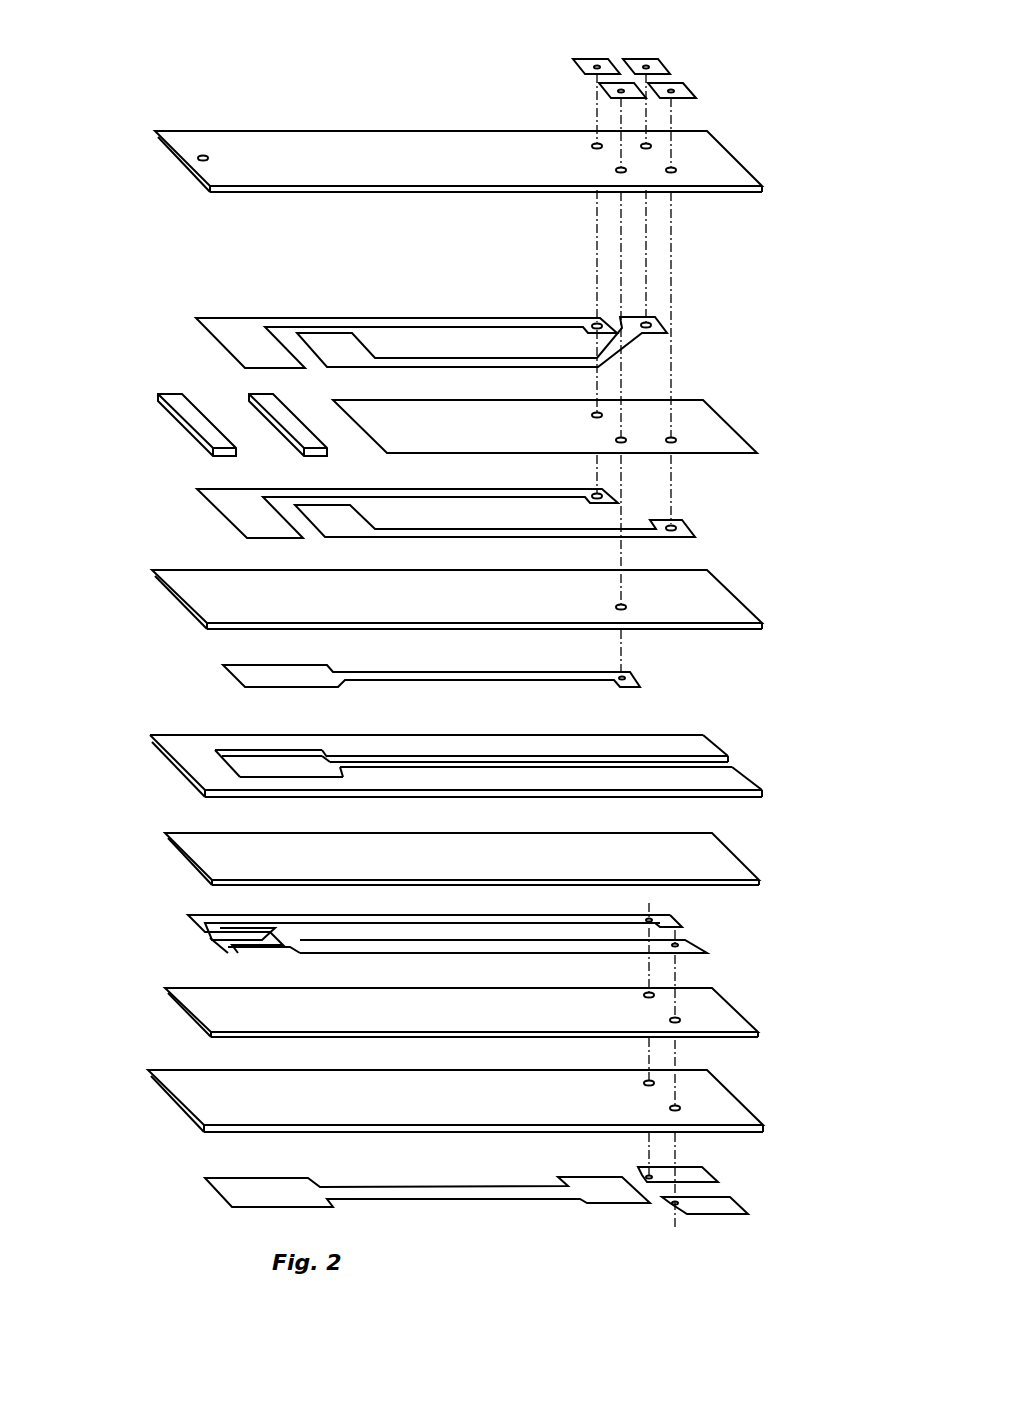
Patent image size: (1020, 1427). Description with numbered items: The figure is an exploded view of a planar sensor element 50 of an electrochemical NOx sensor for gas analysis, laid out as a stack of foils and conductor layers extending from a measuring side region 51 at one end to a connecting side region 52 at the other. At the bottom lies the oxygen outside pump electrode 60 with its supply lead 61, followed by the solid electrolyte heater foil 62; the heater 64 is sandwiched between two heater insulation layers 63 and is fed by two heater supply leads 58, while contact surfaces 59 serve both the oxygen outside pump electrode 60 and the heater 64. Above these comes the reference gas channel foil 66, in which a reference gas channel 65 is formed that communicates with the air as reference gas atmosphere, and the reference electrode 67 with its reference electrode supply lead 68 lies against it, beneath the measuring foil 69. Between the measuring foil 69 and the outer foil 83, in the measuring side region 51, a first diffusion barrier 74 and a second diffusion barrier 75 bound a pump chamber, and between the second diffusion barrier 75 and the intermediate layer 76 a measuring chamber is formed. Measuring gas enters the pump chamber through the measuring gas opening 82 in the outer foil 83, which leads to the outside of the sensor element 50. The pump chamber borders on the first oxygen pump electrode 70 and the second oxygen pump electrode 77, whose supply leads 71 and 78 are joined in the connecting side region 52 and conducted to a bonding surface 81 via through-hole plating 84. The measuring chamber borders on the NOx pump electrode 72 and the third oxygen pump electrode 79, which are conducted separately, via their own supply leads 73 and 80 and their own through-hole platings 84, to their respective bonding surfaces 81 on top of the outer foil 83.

The planar sensor element 50 is at (788, 172).
The measuring side region 51 is at (150, 1136).
The connecting side region 52 is at (499, 1205).
The heater supply leads 58 is at (665, 920).
The contact surfaces 59 is at (734, 1186).
The oxygen outside pump electrode 60 is at (240, 1190).
The supply lead 61 is at (536, 1196).
The heater foil 62 is at (725, 1103).
The heater insulation layers 63 is at (720, 858).
The heater 64 is at (195, 916).
The reference gas channel 65 is at (258, 763).
The reference gas channel foil 66 is at (732, 777).
The reference electrode 67 is at (258, 669).
The reference electrode supply lead 68 is at (538, 678).
The measuring foil 69 is at (718, 603).
The first oxygen pump electrode 70 is at (240, 511).
The supply lead 71 is at (562, 496).
The NOx pump electrode 72 is at (345, 523).
The supply lead 73 is at (640, 534).
The first diffusion barrier 74 is at (187, 413).
The second diffusion barrier 75 is at (263, 397).
The intermediate layer 76 is at (715, 420).
The second oxygen pump electrode 77 is at (240, 337).
The supply lead 78 is at (551, 320).
The third oxygen pump electrode 79 is at (330, 338).
The supply lead 80 is at (640, 345).
The bonding surface 81 is at (684, 72).
The measuring gas opening 82 is at (196, 158).
The outer foil 83 is at (297, 145).
The through-hole plating 84 is at (652, 145).